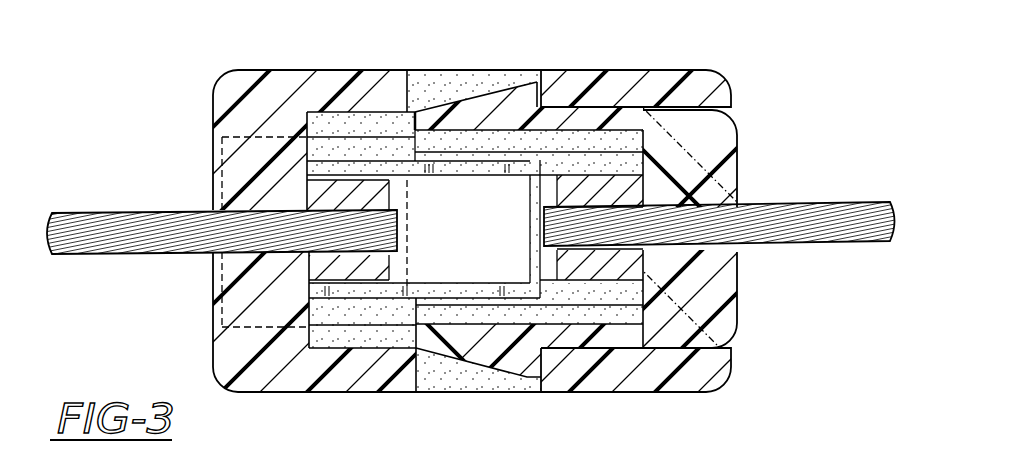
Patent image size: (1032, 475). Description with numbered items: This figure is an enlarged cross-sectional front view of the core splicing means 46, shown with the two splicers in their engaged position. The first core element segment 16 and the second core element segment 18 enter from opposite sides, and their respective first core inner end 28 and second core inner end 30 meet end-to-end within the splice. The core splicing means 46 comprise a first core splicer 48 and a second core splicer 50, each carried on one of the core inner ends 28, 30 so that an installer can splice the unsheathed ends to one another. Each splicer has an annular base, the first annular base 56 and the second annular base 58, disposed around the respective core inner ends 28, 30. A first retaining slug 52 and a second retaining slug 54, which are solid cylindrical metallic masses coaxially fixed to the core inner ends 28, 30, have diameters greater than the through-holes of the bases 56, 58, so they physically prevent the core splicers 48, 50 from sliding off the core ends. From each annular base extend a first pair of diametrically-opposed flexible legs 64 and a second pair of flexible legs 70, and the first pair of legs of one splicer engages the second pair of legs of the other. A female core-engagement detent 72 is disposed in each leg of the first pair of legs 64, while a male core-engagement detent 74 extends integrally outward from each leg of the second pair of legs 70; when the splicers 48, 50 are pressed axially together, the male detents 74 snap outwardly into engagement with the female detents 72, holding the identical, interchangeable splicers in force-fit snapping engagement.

The first core element segment 16 is at (85, 210).
The second core element segment 18 is at (873, 203).
The first core inner end 28 is at (355, 223).
The second core inner end 30 is at (553, 223).
The core splicing means 46 is at (707, 67).
The first core splicer 48 is at (227, 387).
The second core splicer 50 is at (742, 317).
The first retaining slug 52 is at (318, 270).
The second retaining slug 54 is at (640, 265).
The first annular base 56 is at (213, 152).
The second annular base 58 is at (737, 175).
The first pair of flexible legs 64 is at (718, 80).
The second pair of flexible legs 70 is at (472, 105).
The female core-engagement detent 72 is at (430, 80).
The male core-engagement detent 74 is at (522, 92).